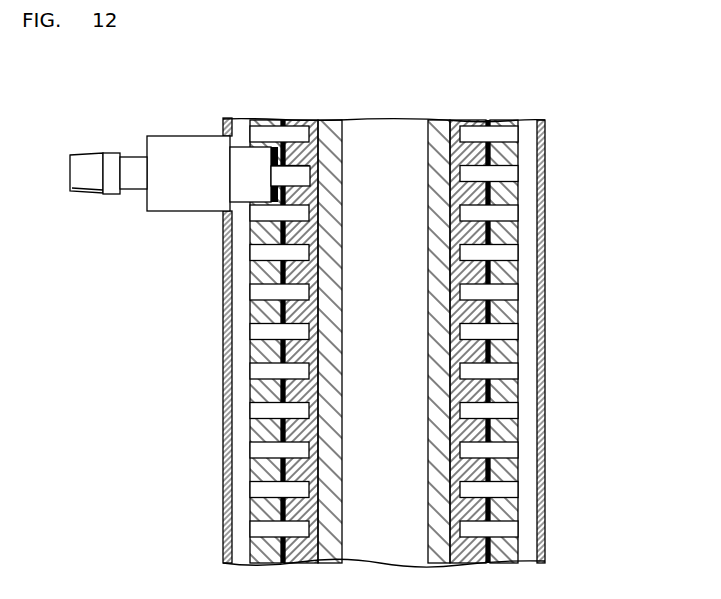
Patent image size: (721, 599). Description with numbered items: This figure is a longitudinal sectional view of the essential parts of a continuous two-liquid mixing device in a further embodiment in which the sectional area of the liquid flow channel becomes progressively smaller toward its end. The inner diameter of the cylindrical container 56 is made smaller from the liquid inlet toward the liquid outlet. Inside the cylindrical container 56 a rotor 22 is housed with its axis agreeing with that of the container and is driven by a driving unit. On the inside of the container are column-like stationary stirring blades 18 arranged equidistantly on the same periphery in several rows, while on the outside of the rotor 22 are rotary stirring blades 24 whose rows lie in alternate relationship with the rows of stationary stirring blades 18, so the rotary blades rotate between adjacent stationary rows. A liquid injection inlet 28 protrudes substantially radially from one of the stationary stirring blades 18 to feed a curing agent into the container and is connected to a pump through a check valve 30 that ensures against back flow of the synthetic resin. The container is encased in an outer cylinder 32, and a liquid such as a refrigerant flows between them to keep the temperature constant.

The stationary stirring blades 18 is at (293, 410).
The rotor 22 is at (438, 140).
The rotary stirring blades 24 is at (300, 312).
The liquid injection inlet 28 is at (275, 177).
The check valve 30 is at (182, 212).
The outer cylinder 32 is at (228, 520).
The cylindrical container 56 is at (507, 432).